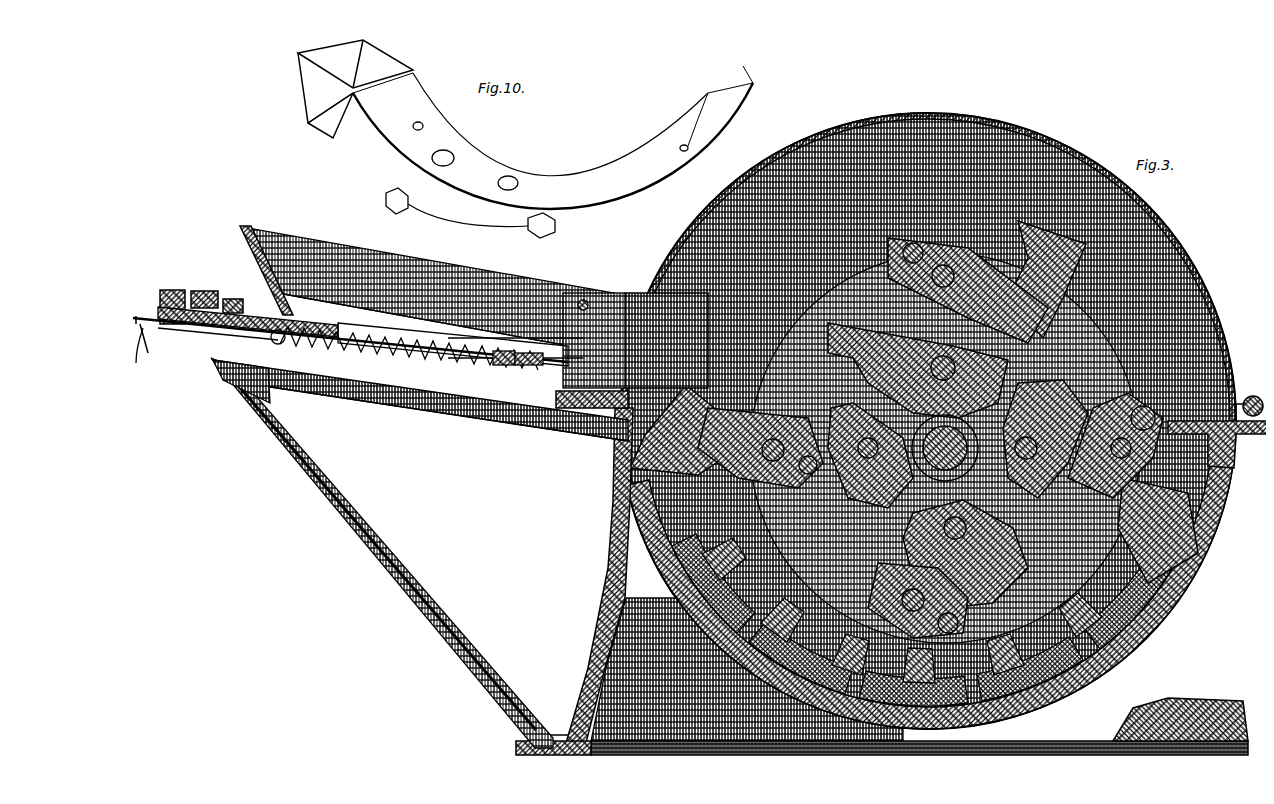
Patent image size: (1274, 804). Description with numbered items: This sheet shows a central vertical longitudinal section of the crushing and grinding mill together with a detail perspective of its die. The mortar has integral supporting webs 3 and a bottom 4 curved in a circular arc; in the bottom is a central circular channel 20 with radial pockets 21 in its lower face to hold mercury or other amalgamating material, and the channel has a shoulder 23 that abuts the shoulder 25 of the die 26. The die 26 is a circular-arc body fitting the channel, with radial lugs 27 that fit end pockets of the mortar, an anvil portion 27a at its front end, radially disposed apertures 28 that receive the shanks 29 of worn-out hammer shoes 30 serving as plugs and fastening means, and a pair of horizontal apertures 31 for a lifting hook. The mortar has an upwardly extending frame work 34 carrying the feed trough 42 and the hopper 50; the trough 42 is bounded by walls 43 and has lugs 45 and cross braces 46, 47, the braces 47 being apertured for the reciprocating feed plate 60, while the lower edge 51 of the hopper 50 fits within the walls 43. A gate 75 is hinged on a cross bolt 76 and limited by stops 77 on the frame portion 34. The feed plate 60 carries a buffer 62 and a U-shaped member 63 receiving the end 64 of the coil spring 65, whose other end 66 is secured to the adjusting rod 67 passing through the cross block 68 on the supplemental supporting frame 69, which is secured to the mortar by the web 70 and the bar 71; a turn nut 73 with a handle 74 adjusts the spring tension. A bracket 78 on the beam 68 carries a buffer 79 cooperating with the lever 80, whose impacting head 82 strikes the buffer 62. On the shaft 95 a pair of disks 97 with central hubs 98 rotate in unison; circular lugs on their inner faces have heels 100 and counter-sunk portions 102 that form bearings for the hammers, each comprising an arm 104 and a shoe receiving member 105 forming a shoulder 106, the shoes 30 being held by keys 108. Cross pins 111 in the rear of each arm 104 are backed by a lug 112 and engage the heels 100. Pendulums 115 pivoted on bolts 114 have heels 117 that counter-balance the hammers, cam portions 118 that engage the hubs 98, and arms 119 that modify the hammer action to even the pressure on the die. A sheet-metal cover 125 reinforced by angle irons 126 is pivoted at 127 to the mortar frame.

In FIG. 3, the supporting webs 3 is at (595, 648).
In FIG. 3, the mortar bottom 4 is at (912, 747).
In FIG. 3, the central circular channel 20 is at (940, 747).
In FIG. 3, the radial pockets 21 is at (855, 747).
In FIG. 3, the shoulder 23 is at (615, 578).
In FIG. 10, the shoulder 25 is at (335, 118).
In FIG. 3, the shoulder 25 is at (640, 550).
In FIG. 10, the die 26 is at (553, 137).
In FIG. 3, the die 26 is at (1200, 493).
In FIG. 10, the radial lugs 27 is at (458, 212).
In FIG. 10, the anvil portion 27a is at (352, 48).
In FIG. 3, the anvil portion 27a is at (628, 477).
In FIG. 10, the radially disposed apertures 28 is at (442, 145).
In FIG. 3, the radially disposed apertures 28 is at (850, 672).
In FIG. 3, the shanks 29 is at (914, 402).
In FIG. 3, the hammer heads or shoes 30 is at (902, 473).
In FIG. 10, the horizontal apertures 31 is at (414, 113).
In FIG. 3, the horizontal apertures 31 is at (700, 565).
In FIG. 3, the upwardly extending frame work 34 is at (605, 290).
In FIG. 3, the feed trough 42 is at (480, 345).
In FIG. 3, the walls 43 is at (478, 398).
In FIG. 3, the lugs 45 is at (410, 358).
In FIG. 3, the cross braces 46 is at (548, 390).
In FIG. 3, the cross braces 47 is at (278, 272).
In FIG. 3, the hopper 50 is at (465, 290).
In FIG. 3, the lower edge 51 is at (454, 321).
In FIG. 3, the reciprocating feed plate 60 is at (445, 340).
In FIG. 3, the buffer 62 is at (226, 294).
In FIG. 3, the U-shaped member 63 is at (500, 355).
In FIG. 3, the end of coil spring 64 is at (480, 371).
In FIG. 3, the coil spring 65 is at (345, 350).
In FIG. 3, the other end of spring 66 is at (275, 368).
In FIG. 3, the adjusting rod 67 is at (210, 365).
In FIG. 3, the cross block 68 is at (245, 360).
In FIG. 3, the supplemental supporting frame 69 is at (368, 548).
In FIG. 3, the web 70 is at (540, 727).
In FIG. 3, the bar 71 is at (390, 385).
In FIG. 3, the turn nut 73 is at (150, 305).
In FIG. 3, the handle 74 is at (141, 358).
In FIG. 3, the gate 75 is at (575, 352).
In FIG. 3, the cross bolt 76 is at (578, 292).
In FIG. 3, the stops 77 is at (536, 340).
In FIG. 3, the bracket 78 is at (172, 325).
In FIG. 3, the buffer 79 is at (168, 282).
In FIG. 3, the lever 80 is at (180, 282).
In FIG. 3, the impacting head 82 is at (205, 287).
In FIG. 3, the shaft 95 is at (945, 448).
In FIG. 3, the disks 97 is at (945, 448).
In FIG. 3, the central hubs 98 is at (950, 418).
In FIG. 3, the heels 100 is at (958, 438).
In FIG. 3, the counter-sunk portion 102 is at (1066, 316).
In FIG. 3, the arms 104 is at (760, 437).
In FIG. 3, the shoe or head receiving members 105 is at (938, 567).
In FIG. 3, the shoulder 106 is at (1073, 580).
In FIG. 3, the keys 108 is at (925, 465).
In FIG. 3, the cross pins 111 is at (976, 427).
In FIG. 3, the lug 112 is at (888, 329).
In FIG. 3, the bolts 114 is at (958, 465).
In FIG. 3, the pendulums 115 is at (960, 467).
In FIG. 3, the heels 117 is at (940, 410).
In FIG. 3, the cam portions 118 is at (960, 445).
In FIG. 3, the arms 119 is at (954, 453).
In FIG. 3, the cover 125 is at (975, 126).
In FIG. 3, the angle irons 126 is at (1250, 388).
In FIG. 3, the pivot 127 is at (1245, 427).